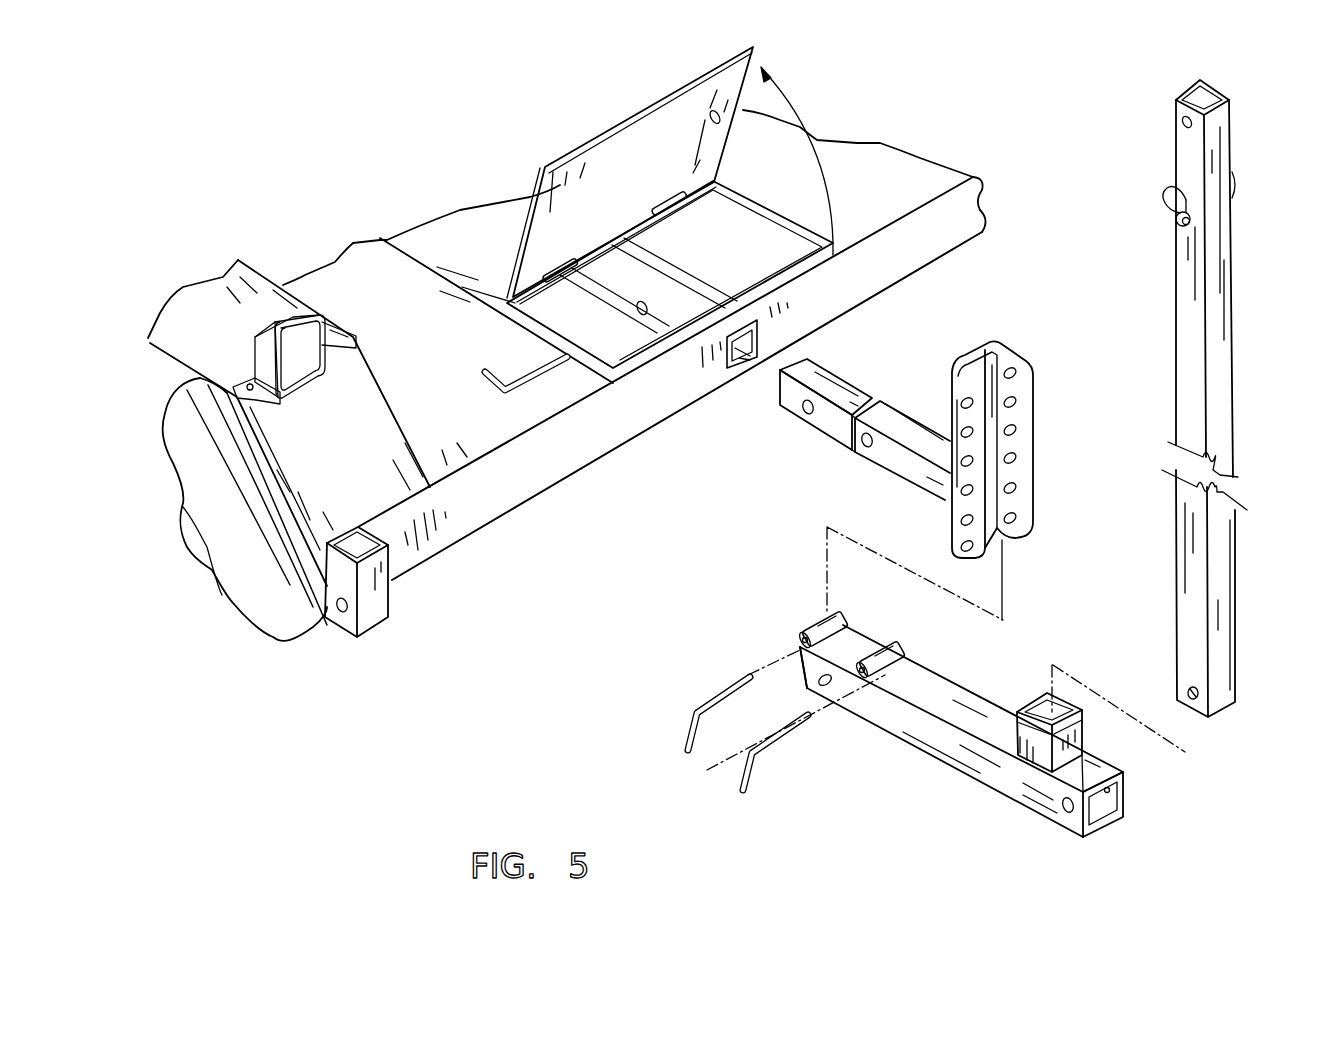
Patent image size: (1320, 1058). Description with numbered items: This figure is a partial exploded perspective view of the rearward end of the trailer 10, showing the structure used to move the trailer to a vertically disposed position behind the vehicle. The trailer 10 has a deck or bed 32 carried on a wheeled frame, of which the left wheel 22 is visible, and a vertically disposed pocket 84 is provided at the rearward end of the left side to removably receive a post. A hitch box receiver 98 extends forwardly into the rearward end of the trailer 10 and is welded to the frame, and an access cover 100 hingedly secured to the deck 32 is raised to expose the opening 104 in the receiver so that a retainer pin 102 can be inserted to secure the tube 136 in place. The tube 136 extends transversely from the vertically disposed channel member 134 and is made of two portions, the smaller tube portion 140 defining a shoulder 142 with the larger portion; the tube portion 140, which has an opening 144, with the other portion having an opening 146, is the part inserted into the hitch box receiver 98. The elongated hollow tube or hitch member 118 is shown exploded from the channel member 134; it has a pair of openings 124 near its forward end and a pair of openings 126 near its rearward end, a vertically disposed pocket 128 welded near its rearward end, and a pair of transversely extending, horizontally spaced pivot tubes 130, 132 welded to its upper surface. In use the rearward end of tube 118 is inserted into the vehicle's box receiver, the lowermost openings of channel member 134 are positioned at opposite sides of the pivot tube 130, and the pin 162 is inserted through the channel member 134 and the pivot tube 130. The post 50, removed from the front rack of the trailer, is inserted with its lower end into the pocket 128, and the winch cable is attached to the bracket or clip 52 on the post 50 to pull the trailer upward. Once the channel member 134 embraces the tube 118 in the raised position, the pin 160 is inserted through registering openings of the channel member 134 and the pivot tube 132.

The trailer 10 is at (488, 183).
The left wheel 22 is at (297, 607).
The deck 32 is at (410, 344).
The post 50 is at (1176, 398).
The bracket 52 is at (1163, 197).
The pocket 84 is at (385, 600).
The hitch box receiver 98 is at (670, 274).
The access cover 100 is at (627, 193).
The retainer pin 102 is at (540, 378).
The opening 104 is at (645, 303).
The hitch member 118 is at (948, 733).
The openings 124 is at (807, 688).
The openings 126 is at (1108, 790).
The pocket 128 is at (1073, 740).
The pivot tube 130 is at (815, 630).
The pivot tube 132 is at (929, 660).
The channel member 134 is at (1003, 360).
The tube 136 is at (840, 401).
The tube portion 140 is at (840, 387).
The shoulder 142 is at (870, 398).
The opening 144 is at (803, 414).
The opening 146 is at (860, 447).
The pin 160 is at (768, 747).
The pin 162 is at (723, 699).